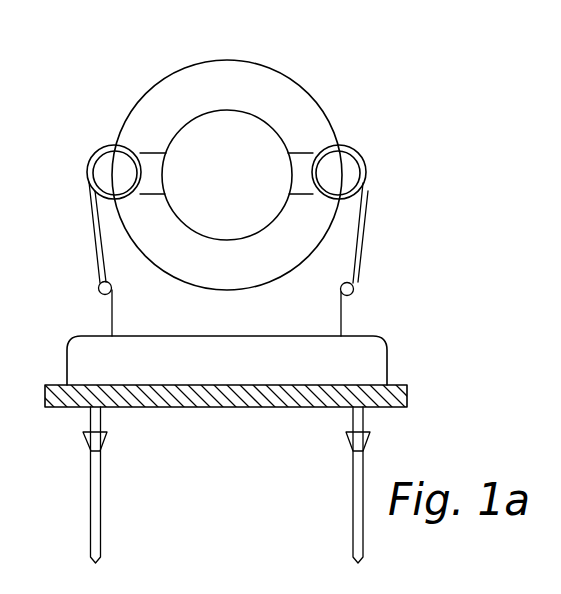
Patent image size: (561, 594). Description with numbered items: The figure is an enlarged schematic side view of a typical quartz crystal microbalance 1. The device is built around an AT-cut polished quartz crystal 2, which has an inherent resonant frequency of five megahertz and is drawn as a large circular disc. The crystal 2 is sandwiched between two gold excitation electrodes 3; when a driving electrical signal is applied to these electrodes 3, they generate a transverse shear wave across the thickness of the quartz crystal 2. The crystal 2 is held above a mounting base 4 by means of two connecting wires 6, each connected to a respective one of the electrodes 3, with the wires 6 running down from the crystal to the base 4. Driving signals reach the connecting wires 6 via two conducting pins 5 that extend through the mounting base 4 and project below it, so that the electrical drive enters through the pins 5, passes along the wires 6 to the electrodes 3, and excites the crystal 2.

The quartz crystal microbalance 1 is at (408, 230).
The quartz crystal 2 is at (317, 98).
The gold excitation electrodes 3 is at (183, 128).
The mounting base 4 is at (387, 355).
The conducting pins 5 is at (100, 507).
The connecting wires 6 is at (90, 212).